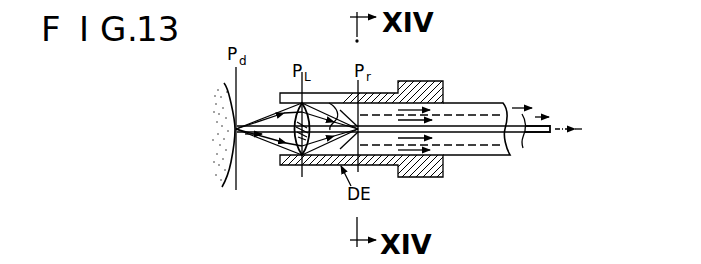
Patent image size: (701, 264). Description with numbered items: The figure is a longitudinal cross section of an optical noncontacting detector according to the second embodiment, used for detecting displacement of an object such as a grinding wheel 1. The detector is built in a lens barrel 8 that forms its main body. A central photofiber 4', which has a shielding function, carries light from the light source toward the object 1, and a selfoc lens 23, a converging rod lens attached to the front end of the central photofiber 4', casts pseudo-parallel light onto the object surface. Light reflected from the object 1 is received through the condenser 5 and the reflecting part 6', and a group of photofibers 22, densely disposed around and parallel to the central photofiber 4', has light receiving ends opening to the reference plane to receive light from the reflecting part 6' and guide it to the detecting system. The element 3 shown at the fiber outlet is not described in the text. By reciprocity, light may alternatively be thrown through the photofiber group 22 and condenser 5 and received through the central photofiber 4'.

The grinding wheel 1 is at (226, 92).
The optical fiber 3 is at (555, 134).
The central photofiber 4' is at (552, 123).
The condenser 5 is at (294, 108).
The reflecting part 6' is at (330, 100).
The lens barrel 8 is at (310, 167).
The photofiber group 22 is at (474, 126).
The selfoc lens 23 is at (292, 150).